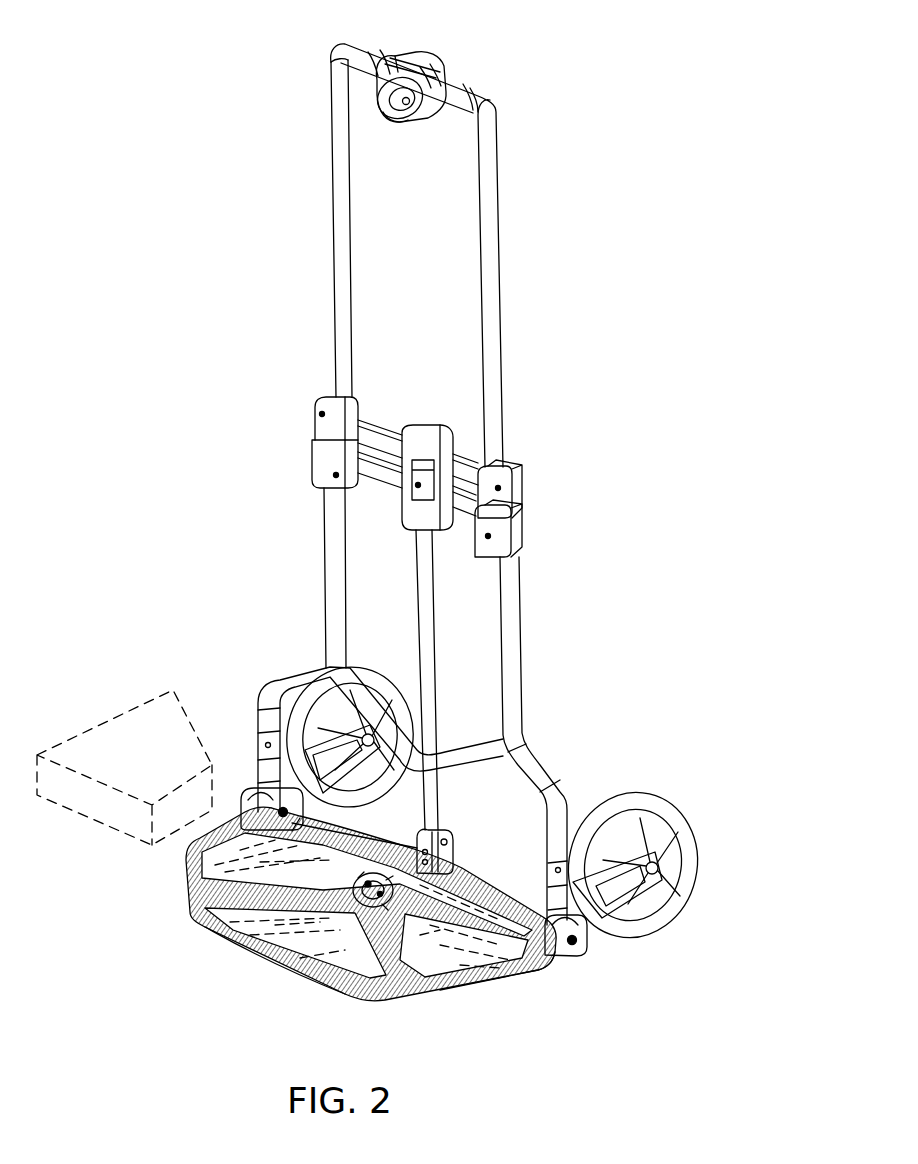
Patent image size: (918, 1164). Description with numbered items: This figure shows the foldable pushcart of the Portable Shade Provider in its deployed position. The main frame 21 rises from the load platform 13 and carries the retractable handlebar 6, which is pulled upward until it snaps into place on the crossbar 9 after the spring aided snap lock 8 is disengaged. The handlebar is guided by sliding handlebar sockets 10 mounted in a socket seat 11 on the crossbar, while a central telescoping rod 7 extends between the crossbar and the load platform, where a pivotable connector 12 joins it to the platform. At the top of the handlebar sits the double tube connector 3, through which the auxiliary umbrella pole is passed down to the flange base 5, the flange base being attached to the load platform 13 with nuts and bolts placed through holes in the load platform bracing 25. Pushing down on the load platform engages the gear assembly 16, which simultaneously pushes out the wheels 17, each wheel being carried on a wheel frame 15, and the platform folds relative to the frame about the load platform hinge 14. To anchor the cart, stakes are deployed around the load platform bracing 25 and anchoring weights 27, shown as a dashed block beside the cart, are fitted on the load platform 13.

The double tube connector 3 is at (427, 57).
The flange base 5 is at (205, 930).
The retractable handlebar 6 is at (494, 102).
The telescoping rod 7 is at (416, 585).
The snap lock 8 is at (438, 427).
The crossbar 9 is at (326, 498).
The sliding handlebar sockets 10 is at (314, 424).
The socket seat 11 is at (316, 460).
The pivotable connector 12 is at (460, 856).
The load platform 13 is at (256, 955).
The load platform hinge 14 is at (574, 945).
The wheel frame 15 is at (633, 905).
The gear assembly 16 is at (535, 962).
The wheel 17 is at (680, 855).
The main frame 21 is at (522, 620).
The load platform bracing 25 is at (383, 952).
The anchoring weights 27 is at (117, 715).